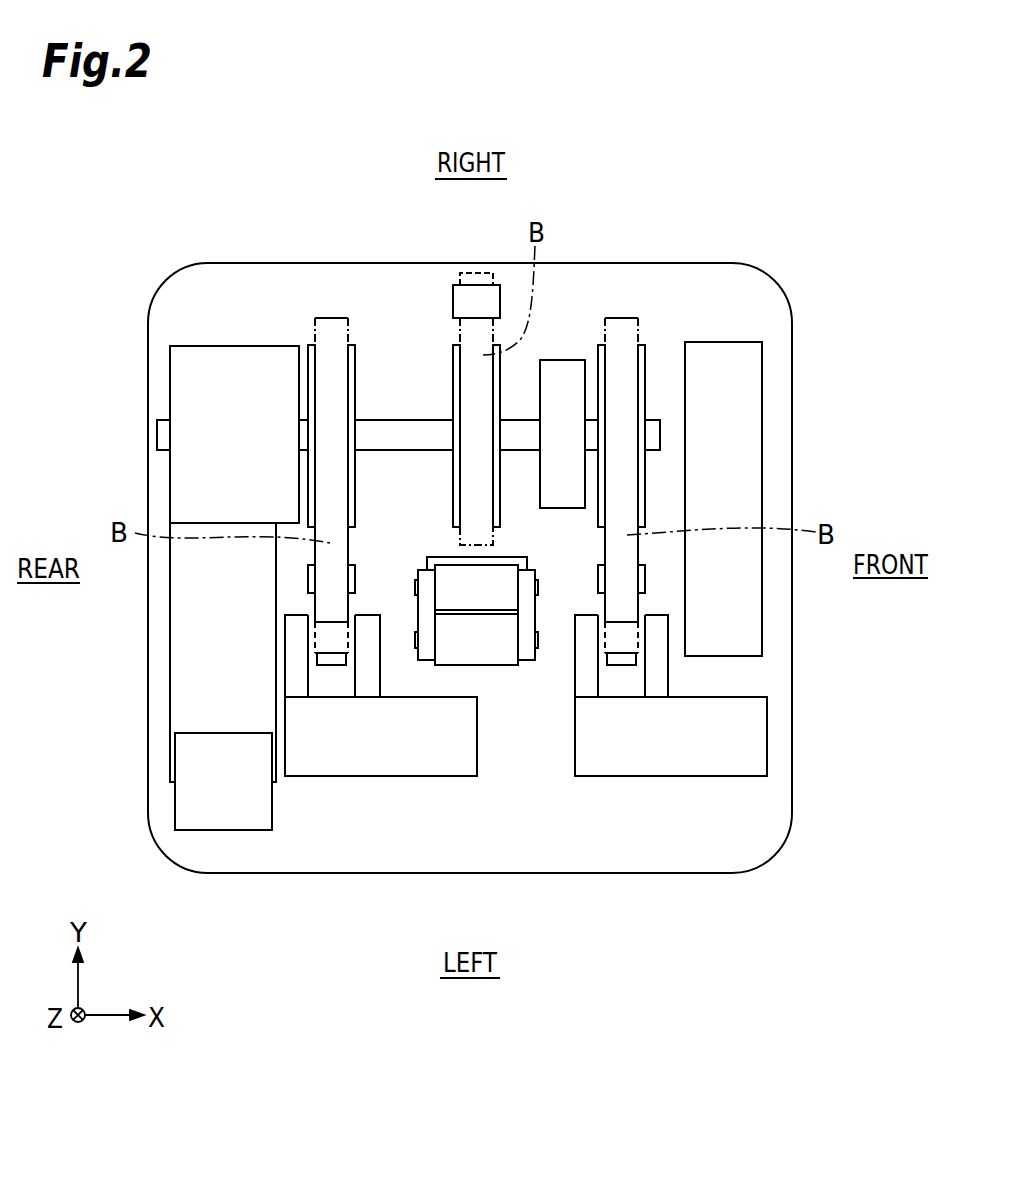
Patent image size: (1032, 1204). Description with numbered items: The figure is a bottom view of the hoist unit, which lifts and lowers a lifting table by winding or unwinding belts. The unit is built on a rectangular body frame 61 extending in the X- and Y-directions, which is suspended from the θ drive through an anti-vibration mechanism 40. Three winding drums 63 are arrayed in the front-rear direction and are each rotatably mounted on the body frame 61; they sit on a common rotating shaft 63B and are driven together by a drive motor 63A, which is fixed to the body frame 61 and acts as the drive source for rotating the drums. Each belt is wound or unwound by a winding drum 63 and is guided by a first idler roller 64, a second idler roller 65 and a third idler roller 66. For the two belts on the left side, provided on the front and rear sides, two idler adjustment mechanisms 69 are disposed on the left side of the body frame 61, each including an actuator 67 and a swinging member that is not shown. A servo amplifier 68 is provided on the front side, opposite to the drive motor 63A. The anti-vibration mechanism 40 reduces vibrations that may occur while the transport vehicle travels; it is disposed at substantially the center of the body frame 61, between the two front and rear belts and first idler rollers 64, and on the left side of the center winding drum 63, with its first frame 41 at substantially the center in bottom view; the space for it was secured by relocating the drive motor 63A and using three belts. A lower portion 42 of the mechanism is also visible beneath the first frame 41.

The anti-vibration mechanism 40 is at (487, 574).
The first frame 41 is at (453, 582).
The gear box 42 is at (475, 647).
The body frame 61 is at (793, 328).
The winding drum 63 is at (308, 347).
The drive motor 63A is at (168, 397).
The common rotating shaft 63B is at (383, 427).
The first idler roller 64 is at (308, 580).
The second idler roller 65 is at (327, 640).
The third idler roller 66 is at (482, 303).
The actuator 67 is at (397, 752).
The servo amplifier 68 is at (742, 425).
The idler adjustment mechanism 69 is at (328, 777).